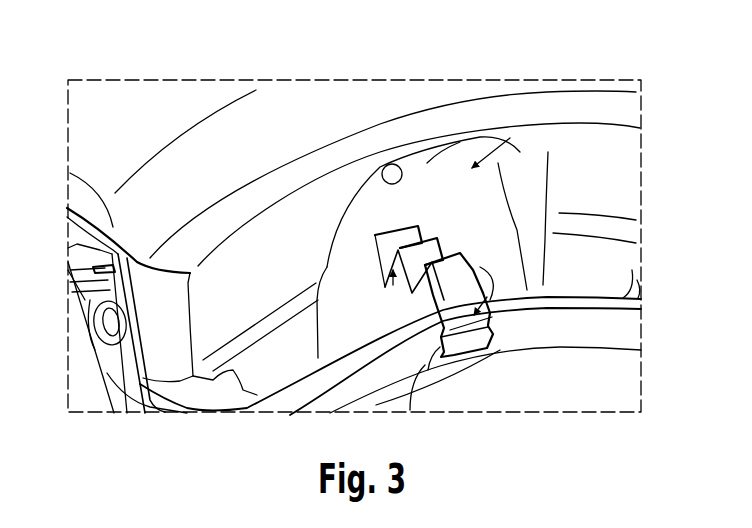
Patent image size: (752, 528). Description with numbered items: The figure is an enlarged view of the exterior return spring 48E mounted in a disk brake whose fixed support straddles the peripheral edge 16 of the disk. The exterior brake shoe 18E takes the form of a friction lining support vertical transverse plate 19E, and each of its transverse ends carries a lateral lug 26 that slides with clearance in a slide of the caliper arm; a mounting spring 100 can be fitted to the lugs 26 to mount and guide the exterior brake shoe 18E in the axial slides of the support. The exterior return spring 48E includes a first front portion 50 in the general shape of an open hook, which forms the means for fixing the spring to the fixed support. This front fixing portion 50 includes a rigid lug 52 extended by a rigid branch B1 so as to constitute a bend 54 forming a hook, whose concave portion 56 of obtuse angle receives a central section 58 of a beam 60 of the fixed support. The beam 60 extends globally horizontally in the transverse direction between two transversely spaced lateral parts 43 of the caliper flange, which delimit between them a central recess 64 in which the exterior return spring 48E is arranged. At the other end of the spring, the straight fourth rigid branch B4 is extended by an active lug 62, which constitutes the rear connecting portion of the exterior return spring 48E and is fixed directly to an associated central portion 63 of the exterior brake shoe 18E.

The peripheral edge 16 is at (290, 112).
The exterior return spring 48E is at (415, 205).
The friction lining support vertical transverse plate 19E is at (428, 163).
The exterior brake shoe 18E is at (505, 165).
The central recess 64 is at (515, 167).
The lateral parts 43 is at (597, 284).
The central portion 63 is at (358, 227).
The active lug 62 is at (380, 254).
The rigid branch B1 is at (476, 273).
The bend 54 is at (487, 275).
The fourth rigid branch B4 is at (393, 297).
The lateral lug 26 is at (97, 326).
The mounting spring 100 is at (112, 364).
The beam 60 is at (611, 333).
The concave portion 56 is at (447, 343).
The central section 58 is at (433, 352).
The rigid lug 52 is at (475, 345).
The first front portion 50 is at (486, 333).